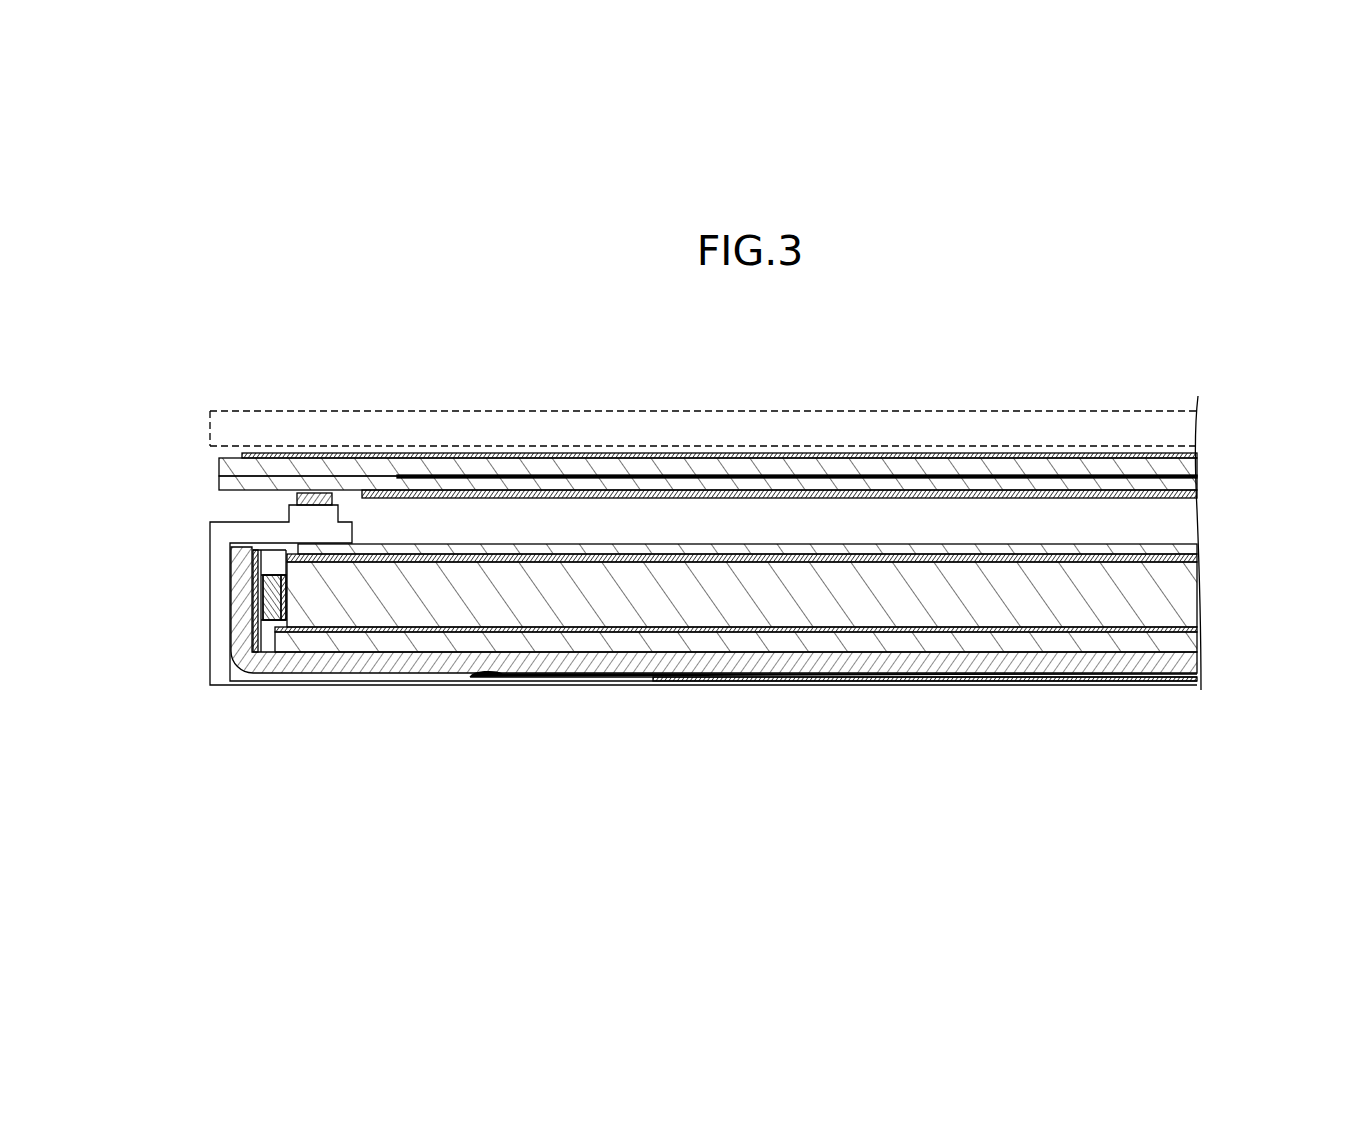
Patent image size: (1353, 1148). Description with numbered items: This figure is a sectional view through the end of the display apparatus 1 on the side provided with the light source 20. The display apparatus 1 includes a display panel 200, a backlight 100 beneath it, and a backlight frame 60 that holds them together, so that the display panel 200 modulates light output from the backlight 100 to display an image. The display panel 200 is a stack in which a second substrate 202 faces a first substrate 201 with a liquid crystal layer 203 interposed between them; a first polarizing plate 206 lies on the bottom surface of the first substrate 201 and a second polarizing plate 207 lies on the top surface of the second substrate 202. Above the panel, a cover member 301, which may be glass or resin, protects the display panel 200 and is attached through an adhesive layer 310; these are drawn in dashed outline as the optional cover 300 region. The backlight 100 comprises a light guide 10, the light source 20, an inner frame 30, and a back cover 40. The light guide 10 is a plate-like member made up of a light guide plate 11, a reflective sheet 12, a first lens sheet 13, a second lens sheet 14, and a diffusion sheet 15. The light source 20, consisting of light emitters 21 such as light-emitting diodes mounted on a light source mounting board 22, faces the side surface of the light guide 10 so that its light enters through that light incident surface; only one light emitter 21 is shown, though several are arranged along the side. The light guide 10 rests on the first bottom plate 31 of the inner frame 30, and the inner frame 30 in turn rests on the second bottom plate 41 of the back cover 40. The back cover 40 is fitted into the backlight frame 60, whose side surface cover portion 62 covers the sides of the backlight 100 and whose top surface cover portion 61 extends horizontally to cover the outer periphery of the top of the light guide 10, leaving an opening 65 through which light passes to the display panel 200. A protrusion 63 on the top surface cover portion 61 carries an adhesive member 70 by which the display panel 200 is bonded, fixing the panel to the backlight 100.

The display apparatus 1 is at (190, 371).
The light guide 10 is at (728, 603).
The light guide plate 11 is at (1198, 630).
The reflective sheet 12 is at (766, 647).
The first lens sheet 13 is at (1198, 595).
The second lens sheet 14 is at (1198, 558).
The diffusion sheet 15 is at (1198, 549).
The light source 20 is at (170, 577).
The light emitter 21 is at (263, 590).
The light source mounting board 22 is at (265, 612).
The inner frame 30 is at (240, 640).
The first bottom plate 31 is at (400, 653).
The back cover 40 is at (253, 556).
The second bottom plate 41 is at (625, 677).
The backlight frame 60 is at (210, 538).
The top surface cover portion 61 is at (275, 519).
The side surface cover portion 62 is at (212, 676).
The protrusion 63 is at (325, 523).
The opening 65 is at (418, 517).
The adhesive member 70 is at (297, 497).
The backlight 100 is at (130, 523).
The display panel 200 is at (778, 476).
The first substrate 201 is at (1198, 484).
The second substrate 202 is at (1198, 466).
The liquid crystal layer 203 is at (1198, 477).
The first polarizing plate 206 is at (815, 511).
The second polarizing plate 207 is at (1198, 455).
The cover member 300 is at (703, 428).
The cover member 301 is at (648, 422).
The adhesive layer 310 is at (717, 447).